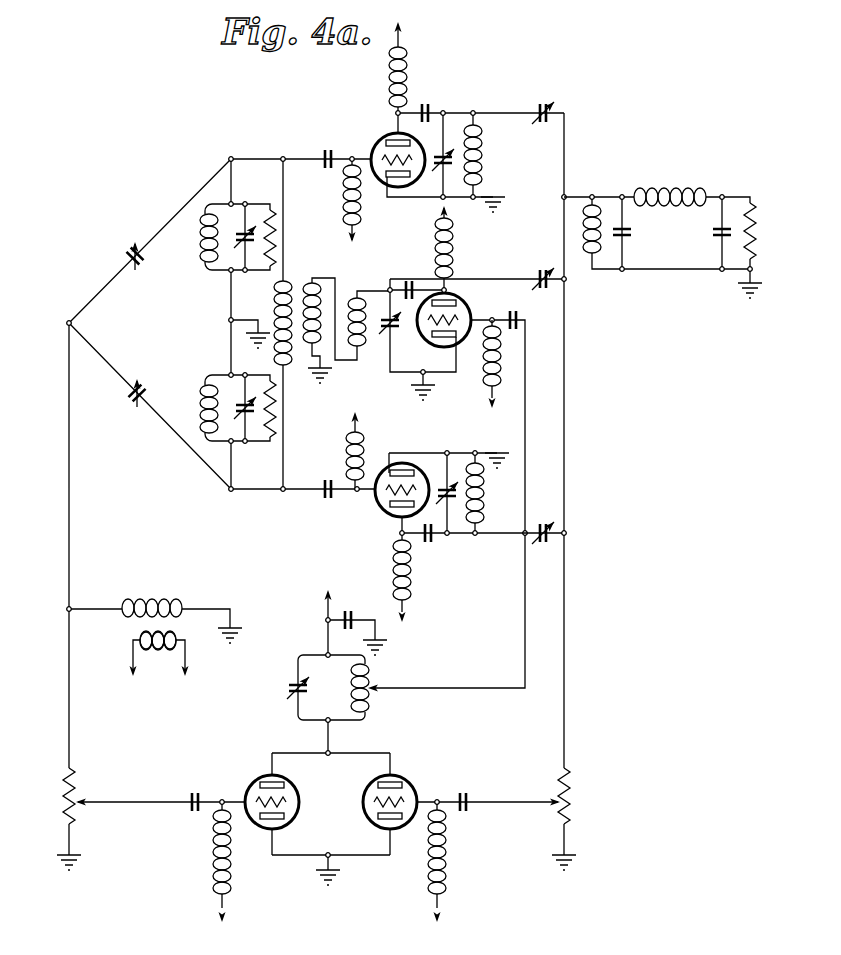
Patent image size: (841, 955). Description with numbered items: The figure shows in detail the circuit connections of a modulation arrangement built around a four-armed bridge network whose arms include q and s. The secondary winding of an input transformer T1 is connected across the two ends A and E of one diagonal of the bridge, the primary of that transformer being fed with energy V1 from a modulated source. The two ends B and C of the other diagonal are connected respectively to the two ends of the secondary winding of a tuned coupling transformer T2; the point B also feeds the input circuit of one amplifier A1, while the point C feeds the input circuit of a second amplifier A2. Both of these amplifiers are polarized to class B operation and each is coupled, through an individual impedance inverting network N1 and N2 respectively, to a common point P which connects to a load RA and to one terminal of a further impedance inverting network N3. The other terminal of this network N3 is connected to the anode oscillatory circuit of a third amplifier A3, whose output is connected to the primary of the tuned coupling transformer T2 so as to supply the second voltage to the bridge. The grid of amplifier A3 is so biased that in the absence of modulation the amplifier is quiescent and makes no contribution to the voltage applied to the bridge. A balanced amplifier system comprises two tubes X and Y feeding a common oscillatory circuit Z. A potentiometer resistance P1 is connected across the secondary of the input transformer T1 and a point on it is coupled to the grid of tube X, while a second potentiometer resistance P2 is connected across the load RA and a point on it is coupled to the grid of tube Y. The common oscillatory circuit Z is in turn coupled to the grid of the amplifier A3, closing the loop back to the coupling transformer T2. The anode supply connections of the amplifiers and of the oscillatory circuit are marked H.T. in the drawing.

The bridge diagonal end A is at (64, 319).
The bridge diagonal end B is at (288, 312).
The bridge diagonal end C is at (291, 500).
The bridge diagonal end E is at (226, 321).
The bridge arm s is at (141, 385).
The bridge arm q is at (238, 249).
The tuned coupling transformer T2 is at (332, 324).
The input transformer T1 is at (154, 628).
The modulated input energy V1 is at (158, 660).
The amplifier A1 is at (444, 136).
The second amplifier A2 is at (444, 517).
The amplifier A3 is at (466, 450).
The impedance inverting network N1 is at (522, 109).
The impedance inverting network N2 is at (521, 538).
The further impedance inverting network N3 is at (519, 275).
The common output point P is at (566, 196).
The load RA is at (673, 243).
The common oscillatory circuit Z is at (337, 675).
The balanced amplifier tube X is at (244, 766).
The balanced amplifier tube Y is at (411, 766).
The potentiometer resistance P1 is at (54, 819).
The potentiometer resistance P2 is at (576, 819).
The high tension supply H.T. is at (381, 311).